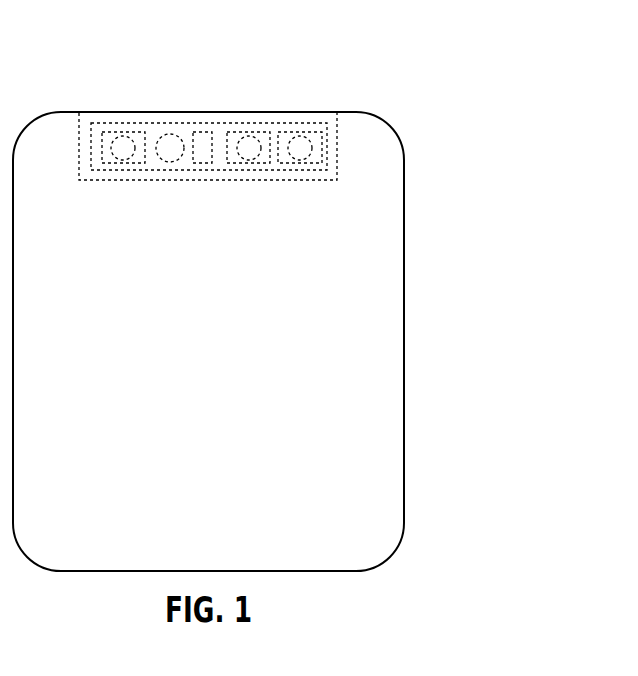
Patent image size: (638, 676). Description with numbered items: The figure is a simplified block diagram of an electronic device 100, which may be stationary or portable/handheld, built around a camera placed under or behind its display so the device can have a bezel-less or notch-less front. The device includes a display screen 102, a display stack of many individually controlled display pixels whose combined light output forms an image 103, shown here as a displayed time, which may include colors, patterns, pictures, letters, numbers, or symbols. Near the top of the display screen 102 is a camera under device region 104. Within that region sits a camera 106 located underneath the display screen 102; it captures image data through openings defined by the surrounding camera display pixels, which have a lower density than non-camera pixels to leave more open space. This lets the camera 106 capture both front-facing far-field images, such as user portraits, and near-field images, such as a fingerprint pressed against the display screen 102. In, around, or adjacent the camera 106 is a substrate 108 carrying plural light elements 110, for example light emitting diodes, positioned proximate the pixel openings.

The electronic device 100 is at (375, 80).
The display screen 102 is at (358, 380).
The image 103 is at (253, 290).
The camera under device (CUD) region 104 is at (337, 173).
The camera 106 is at (115, 147).
The substrate 108 is at (122, 122).
The light elements 110 is at (140, 133).